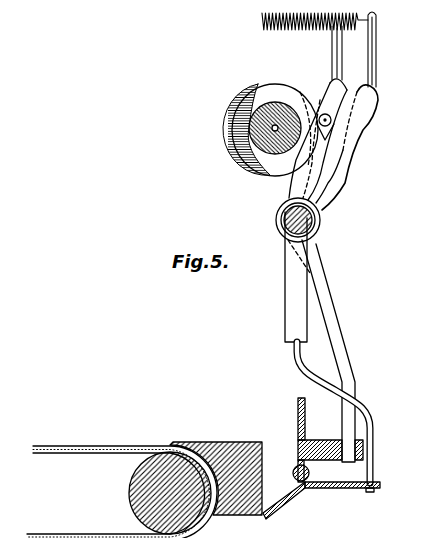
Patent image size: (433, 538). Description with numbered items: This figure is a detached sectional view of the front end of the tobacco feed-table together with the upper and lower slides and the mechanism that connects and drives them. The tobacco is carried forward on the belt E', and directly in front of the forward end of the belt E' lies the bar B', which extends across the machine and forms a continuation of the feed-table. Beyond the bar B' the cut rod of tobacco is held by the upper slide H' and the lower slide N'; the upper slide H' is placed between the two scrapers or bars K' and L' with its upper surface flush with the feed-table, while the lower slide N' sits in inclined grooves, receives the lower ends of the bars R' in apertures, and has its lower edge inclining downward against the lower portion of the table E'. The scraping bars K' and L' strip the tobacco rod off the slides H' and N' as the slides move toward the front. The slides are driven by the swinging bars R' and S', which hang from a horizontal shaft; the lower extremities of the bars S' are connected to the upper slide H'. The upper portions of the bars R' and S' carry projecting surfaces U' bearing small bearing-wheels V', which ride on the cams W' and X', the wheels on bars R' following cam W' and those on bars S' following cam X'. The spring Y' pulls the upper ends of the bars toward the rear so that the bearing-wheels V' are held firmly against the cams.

The spring Y' is at (315, 35).
The cam X' is at (264, 130).
The cam W' is at (275, 136).
The swinging bar S' is at (322, 244).
The swinging bar R' is at (330, 252).
The projecting surface U' is at (340, 122).
The bearing-wheel V' is at (324, 138).
The scraping bar K' is at (290, 419).
The upper slide H' is at (330, 442).
The scraping bar L' is at (307, 472).
The lower slide N' is at (321, 500).
The bar B' is at (216, 468).
The belt E' is at (122, 482).
The roller D is at (159, 493).